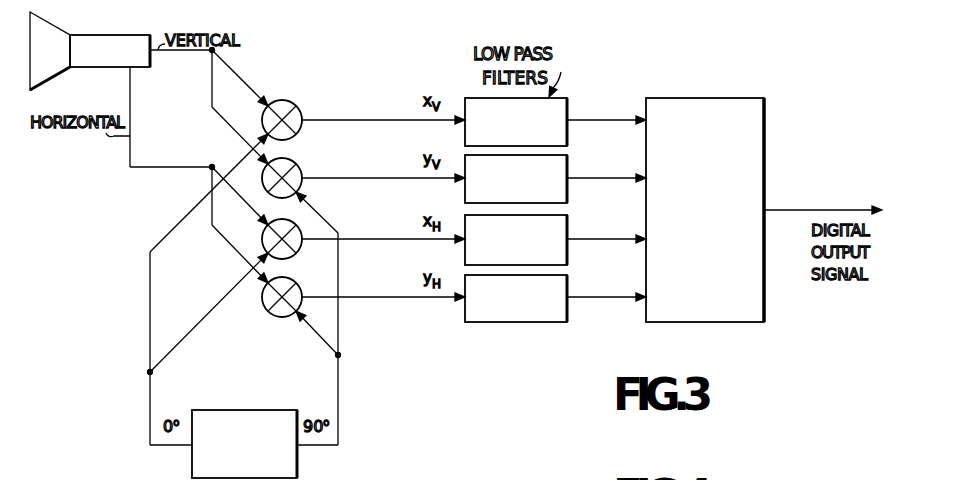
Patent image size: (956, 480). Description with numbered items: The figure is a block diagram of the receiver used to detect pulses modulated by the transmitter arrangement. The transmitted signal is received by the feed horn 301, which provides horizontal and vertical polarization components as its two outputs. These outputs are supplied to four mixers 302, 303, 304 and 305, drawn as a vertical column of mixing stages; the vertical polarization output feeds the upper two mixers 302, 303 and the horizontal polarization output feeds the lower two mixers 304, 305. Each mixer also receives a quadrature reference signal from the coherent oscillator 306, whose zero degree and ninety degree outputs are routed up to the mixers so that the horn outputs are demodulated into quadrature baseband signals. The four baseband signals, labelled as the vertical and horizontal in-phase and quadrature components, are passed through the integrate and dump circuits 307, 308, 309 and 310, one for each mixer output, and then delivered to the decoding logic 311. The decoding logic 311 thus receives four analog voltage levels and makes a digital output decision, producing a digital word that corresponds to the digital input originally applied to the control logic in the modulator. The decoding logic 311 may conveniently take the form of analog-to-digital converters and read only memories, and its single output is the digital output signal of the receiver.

The horn 301 is at (107, 35).
The mixer 302 is at (298, 104).
The mixer 303 is at (298, 164).
The mixer 304 is at (293, 255).
The mixer 305 is at (272, 311).
The coherent oscillator 306 is at (256, 410).
The integrate and dump circuit 307 is at (568, 99).
The integrate and dump circuit 308 is at (569, 168).
The integrate and dump circuit 309 is at (569, 230).
The integrate and dump circuit 310 is at (569, 291).
The decoding logic 311 is at (723, 98).